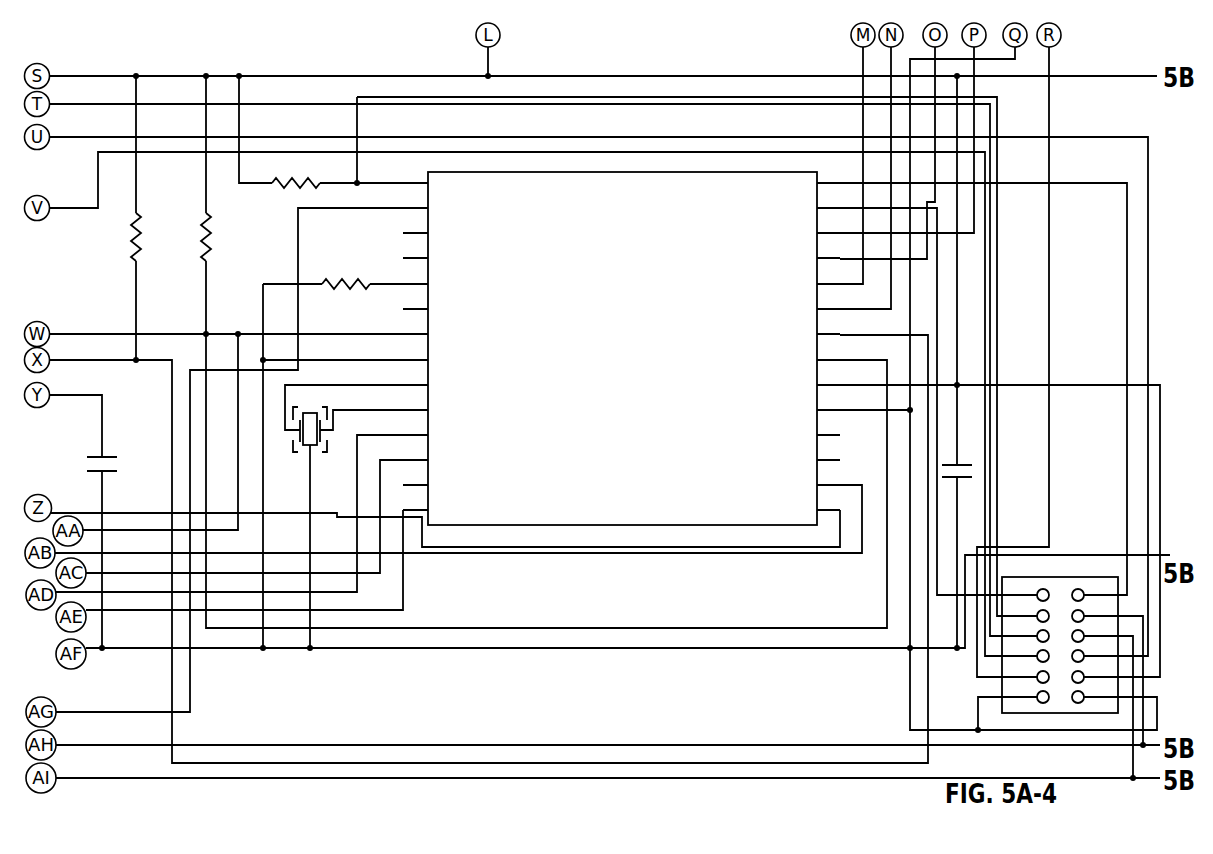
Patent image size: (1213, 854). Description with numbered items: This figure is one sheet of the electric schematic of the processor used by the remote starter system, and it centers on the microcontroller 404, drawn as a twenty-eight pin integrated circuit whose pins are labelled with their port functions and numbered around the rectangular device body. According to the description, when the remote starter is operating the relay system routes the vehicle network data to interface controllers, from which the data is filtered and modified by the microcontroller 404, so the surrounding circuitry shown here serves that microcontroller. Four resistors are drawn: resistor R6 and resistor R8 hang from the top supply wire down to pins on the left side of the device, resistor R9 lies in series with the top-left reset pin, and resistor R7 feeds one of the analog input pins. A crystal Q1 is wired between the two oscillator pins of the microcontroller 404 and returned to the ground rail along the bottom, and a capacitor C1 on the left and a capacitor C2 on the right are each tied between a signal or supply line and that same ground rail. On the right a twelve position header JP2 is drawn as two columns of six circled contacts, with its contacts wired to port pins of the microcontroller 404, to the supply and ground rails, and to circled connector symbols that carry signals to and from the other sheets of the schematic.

The microcontroller 404 is at (648, 172).
The resistor R6 10K R6 is at (142, 237).
The resistor R7 10K R7 is at (346, 283).
The resistor R8 10K R8 is at (229, 237).
The resistor R9 10K R9 is at (282, 179).
The capacitor C1 0.1uF C1 is at (130, 473).
The capacitor C2 0.1uF C2 is at (963, 482).
The crystal Q1 10MHz Q1 is at (271, 430).
The connector JP2 is at (1060, 634).